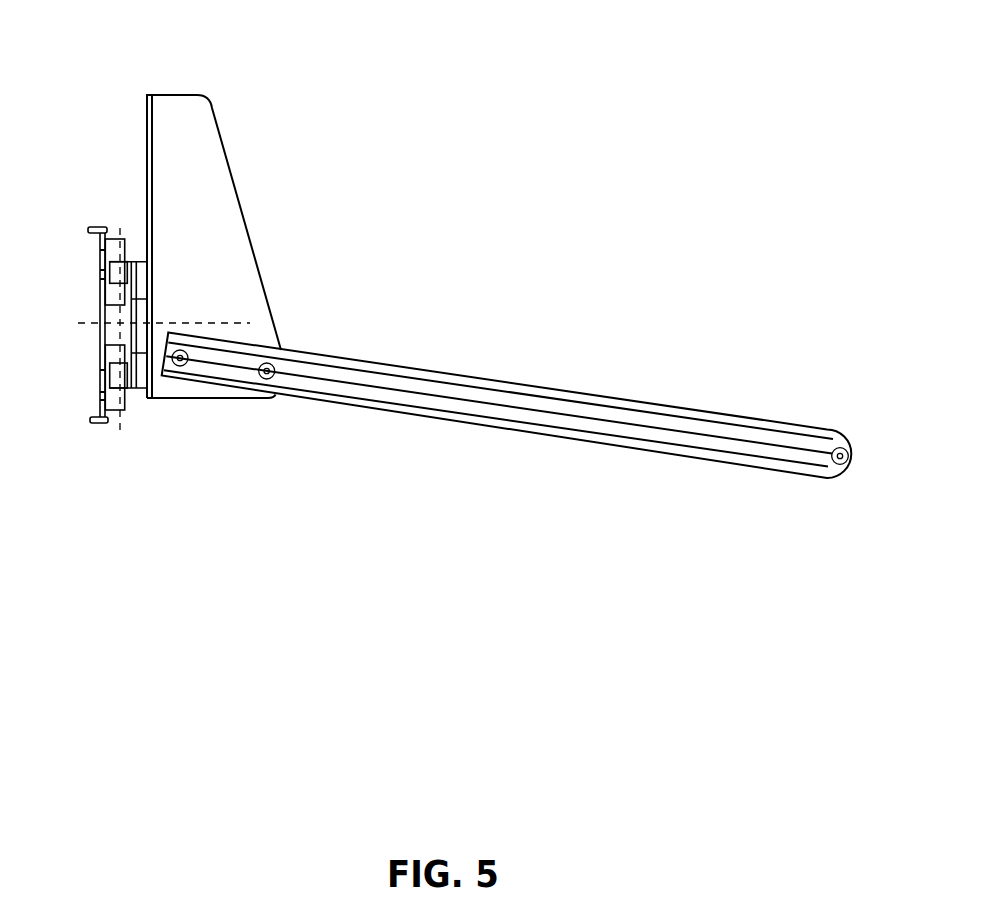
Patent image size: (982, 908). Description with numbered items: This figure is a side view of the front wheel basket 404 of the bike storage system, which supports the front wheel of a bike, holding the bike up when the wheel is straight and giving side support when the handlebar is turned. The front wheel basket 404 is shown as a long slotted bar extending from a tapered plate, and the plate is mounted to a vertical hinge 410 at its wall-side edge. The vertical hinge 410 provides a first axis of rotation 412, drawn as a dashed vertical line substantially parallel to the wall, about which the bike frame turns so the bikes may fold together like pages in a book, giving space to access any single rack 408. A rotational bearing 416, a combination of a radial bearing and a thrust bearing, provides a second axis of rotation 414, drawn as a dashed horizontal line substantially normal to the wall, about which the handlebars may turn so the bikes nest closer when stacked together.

The front wheel basket 404 is at (196, 140).
The rack 408 is at (674, 424).
The vertical hinge 410 is at (112, 413).
The first axis of rotation 412 is at (117, 228).
The second axis of rotation 414 is at (86, 328).
The rotational bearing 416 is at (132, 388).